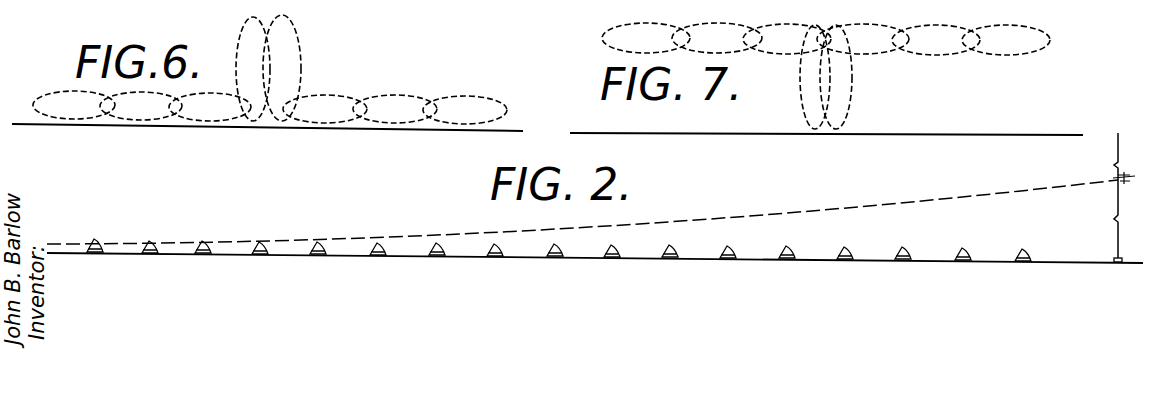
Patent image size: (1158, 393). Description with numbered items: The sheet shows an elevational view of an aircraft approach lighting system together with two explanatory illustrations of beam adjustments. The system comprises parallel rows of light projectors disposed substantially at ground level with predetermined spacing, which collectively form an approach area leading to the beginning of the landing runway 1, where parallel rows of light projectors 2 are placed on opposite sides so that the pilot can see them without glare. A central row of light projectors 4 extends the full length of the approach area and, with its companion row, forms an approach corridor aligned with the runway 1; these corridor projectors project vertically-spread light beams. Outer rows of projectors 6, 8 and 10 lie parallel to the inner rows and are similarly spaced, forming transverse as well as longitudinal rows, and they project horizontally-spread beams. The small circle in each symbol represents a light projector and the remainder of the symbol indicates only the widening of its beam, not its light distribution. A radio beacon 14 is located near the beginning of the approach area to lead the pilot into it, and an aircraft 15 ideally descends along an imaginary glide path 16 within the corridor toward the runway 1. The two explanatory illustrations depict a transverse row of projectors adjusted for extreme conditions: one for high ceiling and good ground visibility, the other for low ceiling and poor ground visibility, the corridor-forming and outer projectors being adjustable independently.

The landing runway 1 is at (63, 250).
The light projectors 2 is at (90, 253).
The central row of light projectors 4 is at (262, 240).
The outer row of light projectors 6 is at (203, 252).
The outer row of light projectors 8 is at (494, 254).
The outer row of light projectors 10 is at (843, 257).
The radio beacon 14 is at (1116, 260).
The aircraft 15 is at (1120, 174).
The glide path 16 is at (855, 208).